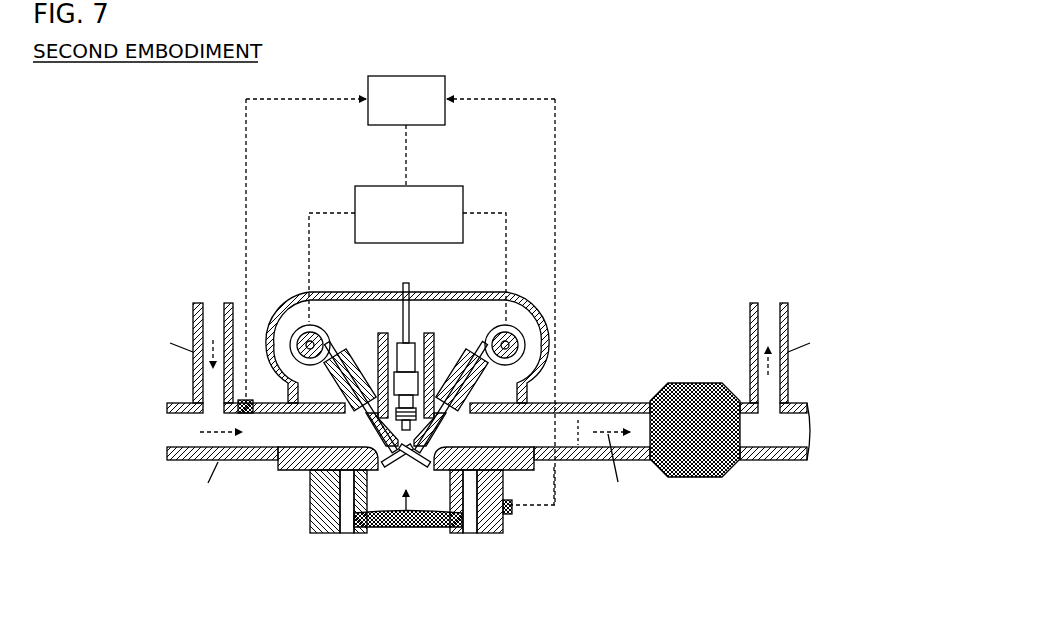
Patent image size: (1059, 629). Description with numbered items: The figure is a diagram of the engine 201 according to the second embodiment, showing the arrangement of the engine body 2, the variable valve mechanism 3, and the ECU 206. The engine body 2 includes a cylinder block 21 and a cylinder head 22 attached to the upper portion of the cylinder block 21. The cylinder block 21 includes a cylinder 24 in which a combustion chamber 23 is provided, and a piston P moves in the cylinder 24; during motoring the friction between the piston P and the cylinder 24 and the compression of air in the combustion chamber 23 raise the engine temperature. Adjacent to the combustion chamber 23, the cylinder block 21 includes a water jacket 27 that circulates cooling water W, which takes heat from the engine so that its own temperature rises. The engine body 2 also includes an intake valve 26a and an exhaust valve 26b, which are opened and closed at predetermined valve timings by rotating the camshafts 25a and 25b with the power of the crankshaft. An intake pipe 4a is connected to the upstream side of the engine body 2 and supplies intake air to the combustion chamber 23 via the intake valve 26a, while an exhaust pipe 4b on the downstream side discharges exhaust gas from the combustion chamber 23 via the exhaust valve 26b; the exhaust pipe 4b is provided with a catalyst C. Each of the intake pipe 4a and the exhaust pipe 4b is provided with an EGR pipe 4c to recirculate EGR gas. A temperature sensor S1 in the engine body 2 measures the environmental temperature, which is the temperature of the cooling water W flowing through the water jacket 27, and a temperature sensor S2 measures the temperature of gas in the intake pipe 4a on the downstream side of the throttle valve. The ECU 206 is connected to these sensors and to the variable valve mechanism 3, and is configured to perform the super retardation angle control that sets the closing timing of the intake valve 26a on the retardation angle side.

The engine 201 is at (217, 127).
The ECU 206 is at (425, 76).
The variable valve mechanism 3 is at (447, 186).
The camshaft 25a is at (316, 326).
The camshaft 25b is at (500, 326).
The intake valve 26a is at (352, 367).
The exhaust valve 26b is at (462, 367).
The intake pipe 4a is at (188, 403).
The exhaust pipe 4b is at (618, 402).
The EGR pipe 4c is at (194, 307).
The catalyst C is at (689, 383).
The temperature sensor S2 is at (253, 404).
The temperature sensor S1 is at (507, 512).
The engine body 2 is at (413, 544).
The cylinder block 21 is at (322, 535).
The cylinder head 22 is at (300, 476).
The combustion chamber 23 is at (414, 528).
The cylinder 24 is at (504, 491).
The water jacket 27 is at (349, 535).
The cooling water W is at (352, 536).
The piston P is at (376, 536).